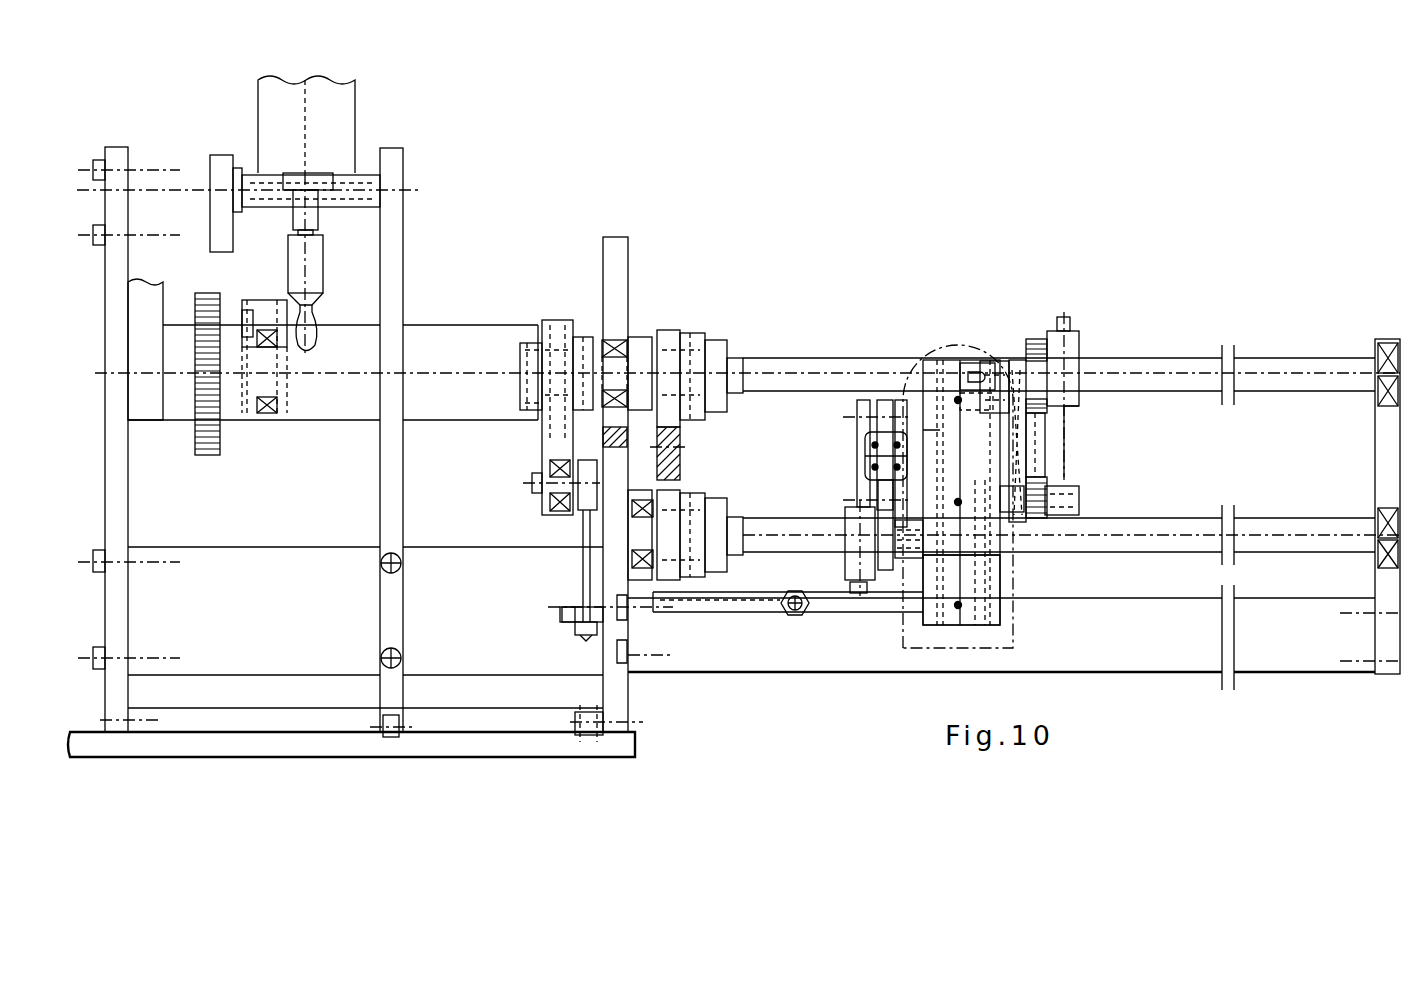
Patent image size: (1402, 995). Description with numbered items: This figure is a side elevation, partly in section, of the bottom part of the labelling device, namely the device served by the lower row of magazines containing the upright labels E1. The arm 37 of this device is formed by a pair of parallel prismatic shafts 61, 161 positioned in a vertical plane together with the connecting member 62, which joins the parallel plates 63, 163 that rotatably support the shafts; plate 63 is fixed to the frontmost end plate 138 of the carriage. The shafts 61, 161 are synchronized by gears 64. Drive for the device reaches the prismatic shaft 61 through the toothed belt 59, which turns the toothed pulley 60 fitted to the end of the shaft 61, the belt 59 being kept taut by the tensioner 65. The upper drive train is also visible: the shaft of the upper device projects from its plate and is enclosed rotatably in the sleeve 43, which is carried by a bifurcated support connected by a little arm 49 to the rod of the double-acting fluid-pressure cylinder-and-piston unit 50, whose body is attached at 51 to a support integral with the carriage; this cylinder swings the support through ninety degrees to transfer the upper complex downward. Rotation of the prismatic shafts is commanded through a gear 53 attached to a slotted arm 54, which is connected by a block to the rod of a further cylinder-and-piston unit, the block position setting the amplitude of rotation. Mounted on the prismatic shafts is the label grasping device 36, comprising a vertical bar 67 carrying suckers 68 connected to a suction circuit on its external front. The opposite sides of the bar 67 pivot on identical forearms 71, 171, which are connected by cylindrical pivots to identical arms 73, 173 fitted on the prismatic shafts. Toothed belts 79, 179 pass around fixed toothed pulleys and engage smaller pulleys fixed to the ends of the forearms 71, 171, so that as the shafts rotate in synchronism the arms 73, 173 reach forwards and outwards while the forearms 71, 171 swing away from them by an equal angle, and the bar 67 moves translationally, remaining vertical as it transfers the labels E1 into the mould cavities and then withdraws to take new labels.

The double-acting cylinder-and-piston unit 50 is at (345, 105).
The attachment point of cylinder body 51 is at (365, 190).
The slotted arm 54 is at (140, 300).
The gear 53 is at (212, 457).
The little arm 49 is at (265, 305).
The sleeve 43 is at (445, 323).
The toothed belt 59 is at (557, 433).
The toothed pulley 60 is at (575, 320).
The parallel plate 63 is at (640, 337).
The gears 64 is at (683, 462).
The belt tensioner 65 is at (538, 515).
The end plate of the carriage 138 is at (620, 703).
The prismatic shaft 61 is at (1158, 358).
The prismatic shaft 161 is at (1145, 519).
The forearm 171 is at (905, 403).
The toothed belt 179 is at (885, 490).
The arm 173 is at (845, 566).
The upright labels E1 is at (980, 348).
The vertical bar 67 is at (990, 575).
The suckers 68 is at (957, 603).
The label grasping device 36 is at (1031, 326).
The arm 73 is at (1077, 330).
The toothed belt 79 is at (1040, 428).
The forearm 71 is at (1018, 440).
The parallel plate 163 is at (1386, 431).
The arm 37 is at (1310, 403).
The connecting member 62 is at (1143, 668).